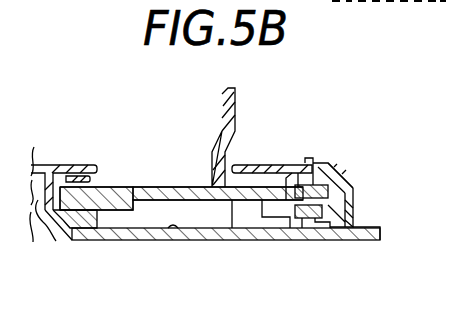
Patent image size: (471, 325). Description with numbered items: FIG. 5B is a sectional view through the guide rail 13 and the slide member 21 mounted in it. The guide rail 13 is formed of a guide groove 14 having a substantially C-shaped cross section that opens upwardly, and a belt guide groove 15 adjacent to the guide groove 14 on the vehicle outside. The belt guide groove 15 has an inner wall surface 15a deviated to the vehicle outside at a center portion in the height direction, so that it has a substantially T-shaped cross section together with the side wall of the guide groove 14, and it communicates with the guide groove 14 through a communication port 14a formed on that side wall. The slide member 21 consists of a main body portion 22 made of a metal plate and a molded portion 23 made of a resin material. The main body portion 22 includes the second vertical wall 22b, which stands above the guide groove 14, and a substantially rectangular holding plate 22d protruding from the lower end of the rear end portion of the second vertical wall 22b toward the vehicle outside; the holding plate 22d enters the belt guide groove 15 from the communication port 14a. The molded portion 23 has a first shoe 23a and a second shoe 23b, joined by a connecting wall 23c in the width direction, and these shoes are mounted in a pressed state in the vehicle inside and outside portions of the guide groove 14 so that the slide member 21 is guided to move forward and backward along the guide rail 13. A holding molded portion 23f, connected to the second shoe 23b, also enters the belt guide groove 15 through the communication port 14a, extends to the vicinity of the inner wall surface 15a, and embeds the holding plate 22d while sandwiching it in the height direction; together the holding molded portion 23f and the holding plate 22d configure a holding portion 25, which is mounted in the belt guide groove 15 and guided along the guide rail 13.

The guide rail 13 is at (375, 168).
The guide groove 14 is at (170, 226).
The communication port 14a is at (290, 176).
The belt guide groove 15 is at (330, 233).
The inner wall surface 15a is at (354, 188).
The slide member 21 is at (195, 109).
The main body portion 22 is at (212, 153).
The second vertical wall 22b is at (236, 103).
The holding plate 22d is at (295, 229).
The molded portion 23 is at (173, 187).
The first shoe 23a is at (88, 242).
The second shoe 23b is at (252, 228).
The connecting wall 23c is at (138, 230).
The holding molded portion 23f is at (331, 176).
The holding portion 25 is at (365, 232).